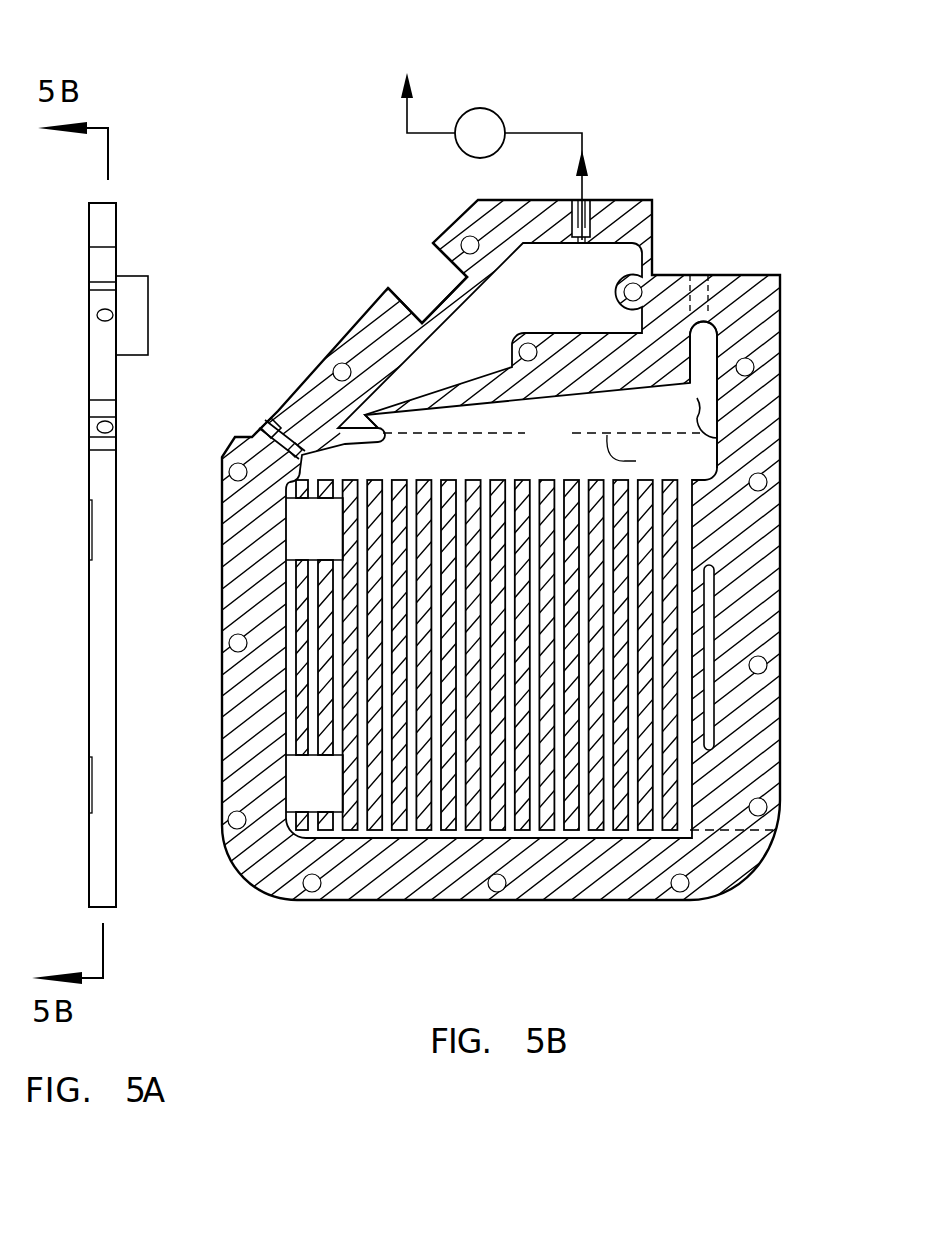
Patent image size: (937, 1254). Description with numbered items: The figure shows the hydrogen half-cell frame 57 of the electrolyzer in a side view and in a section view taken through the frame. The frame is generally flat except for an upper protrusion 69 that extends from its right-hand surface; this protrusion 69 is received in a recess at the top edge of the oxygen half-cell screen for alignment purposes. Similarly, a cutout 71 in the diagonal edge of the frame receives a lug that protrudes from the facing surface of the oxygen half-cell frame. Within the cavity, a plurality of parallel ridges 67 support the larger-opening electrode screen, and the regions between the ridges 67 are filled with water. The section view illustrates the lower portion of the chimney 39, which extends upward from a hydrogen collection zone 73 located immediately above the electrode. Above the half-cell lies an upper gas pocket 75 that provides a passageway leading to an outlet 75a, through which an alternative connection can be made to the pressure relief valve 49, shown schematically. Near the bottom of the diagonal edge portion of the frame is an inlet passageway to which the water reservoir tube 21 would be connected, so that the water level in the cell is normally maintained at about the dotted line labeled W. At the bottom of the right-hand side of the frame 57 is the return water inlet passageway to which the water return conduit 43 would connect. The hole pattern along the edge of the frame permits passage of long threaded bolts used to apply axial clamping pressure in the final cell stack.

In FIG. 5A, the hydrogen half-cell frame 57 is at (178, 198).
In FIG. 5B, the hydrogen half-cell frame 57 is at (722, 196).
In FIG. 5A, the upper protrusion 69 is at (148, 280).
In FIG. 5B, the pressure relief valve 49 is at (487, 108).
In FIG. 5B, the outlet 75a is at (590, 205).
In FIG. 5B, the upper gas pocket 75 is at (566, 298).
In FIG. 5B, the chimney 39 is at (692, 283).
In FIG. 5B, the cutout 71 is at (408, 292).
In FIG. 5B, the water reservoir tube 21 is at (177, 386).
In FIG. 5B, the hydrogen collection zone 73 is at (566, 447).
In FIG. 5B, the parallel ridges 67 is at (447, 812).
In FIG. 5B, the water return conduit 43 is at (777, 835).